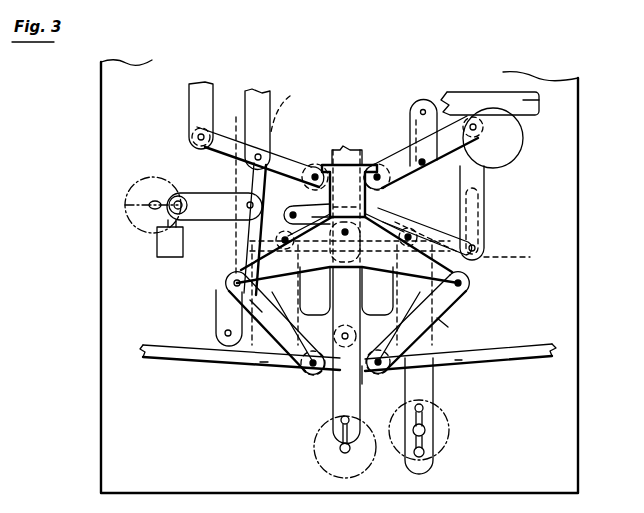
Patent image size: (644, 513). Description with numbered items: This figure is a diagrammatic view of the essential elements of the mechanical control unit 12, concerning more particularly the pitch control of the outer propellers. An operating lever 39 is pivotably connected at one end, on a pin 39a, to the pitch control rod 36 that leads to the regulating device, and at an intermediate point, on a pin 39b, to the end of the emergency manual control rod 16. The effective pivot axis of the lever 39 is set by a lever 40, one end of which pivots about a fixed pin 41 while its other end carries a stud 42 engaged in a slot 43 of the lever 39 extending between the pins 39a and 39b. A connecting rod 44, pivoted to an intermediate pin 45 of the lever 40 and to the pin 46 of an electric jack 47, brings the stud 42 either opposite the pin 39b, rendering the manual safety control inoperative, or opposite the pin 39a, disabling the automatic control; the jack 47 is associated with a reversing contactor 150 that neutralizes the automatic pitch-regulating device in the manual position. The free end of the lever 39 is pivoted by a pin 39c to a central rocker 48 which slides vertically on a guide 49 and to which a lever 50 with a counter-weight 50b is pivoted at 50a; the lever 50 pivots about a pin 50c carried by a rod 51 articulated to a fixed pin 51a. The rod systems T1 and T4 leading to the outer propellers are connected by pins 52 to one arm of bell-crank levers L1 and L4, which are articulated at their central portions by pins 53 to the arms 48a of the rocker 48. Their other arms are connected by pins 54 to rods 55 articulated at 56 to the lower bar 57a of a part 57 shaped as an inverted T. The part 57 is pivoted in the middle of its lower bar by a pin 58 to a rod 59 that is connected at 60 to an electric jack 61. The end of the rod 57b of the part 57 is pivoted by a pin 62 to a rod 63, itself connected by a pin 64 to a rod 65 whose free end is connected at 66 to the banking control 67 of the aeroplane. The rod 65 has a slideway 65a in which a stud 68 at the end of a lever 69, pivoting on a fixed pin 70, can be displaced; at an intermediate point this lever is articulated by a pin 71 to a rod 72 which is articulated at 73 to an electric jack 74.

The mechanical control unit 12 is at (253, 456).
The emergency manual control rod 16 is at (262, 100).
The pitch control rod 36 is at (205, 108).
The operating lever 39 is at (306, 162).
The pin 39a is at (198, 137).
The pin 39b is at (255, 160).
The pin 39c is at (315, 172).
The lever 40 is at (240, 250).
The fixed pin 41 is at (225, 333).
The stud 42 is at (288, 105).
The slot 43 is at (232, 129).
The connecting rod 44 is at (197, 212).
The intermediate pin 45 is at (233, 222).
The pin 46 is at (178, 196).
The electric jack 47 is at (150, 198).
The central rocker 48 is at (360, 168).
The arms 48a is at (226, 284).
The guide 49 is at (344, 148).
The lever 50 is at (431, 164).
The pivot 50a is at (380, 181).
The counter-weight 50b is at (512, 140).
The pin 50c is at (422, 166).
The rod 51 is at (414, 138).
The fixed pin 51a is at (420, 110).
The pins 52 is at (308, 368).
The pins 53 is at (233, 297).
The pins 54 is at (282, 238).
The rods 55 is at (324, 277).
The articulation 56 is at (268, 362).
The part in the form of an inverted T 57 is at (364, 282).
The lower bar 57a is at (365, 377).
The rod 57b is at (332, 297).
The pin 58 is at (346, 332).
The rod 59 is at (343, 378).
The pivot 60 is at (340, 420).
The electric jack 61 is at (314, 447).
The pin 62 is at (340, 236).
The rod 63 is at (478, 262).
The pin 64 is at (478, 248).
The rod 65 is at (486, 178).
The slideway 65a is at (481, 210).
The connection 66 is at (470, 122).
The banking control 67 is at (539, 100).
The stud 68 is at (518, 258).
The lever 69 is at (320, 213).
The fixed pin 70 is at (292, 211).
The pin 71 is at (422, 224).
The rod 72 is at (436, 411).
The articulation 73 is at (425, 452).
The electric jack 74 is at (450, 437).
The reversing contactor 150 is at (157, 245).
The bell-crank lever L1 is at (252, 328).
The bell-crank lever L4 is at (452, 331).
The rod system T1 is at (198, 356).
The rod system T4 is at (518, 355).